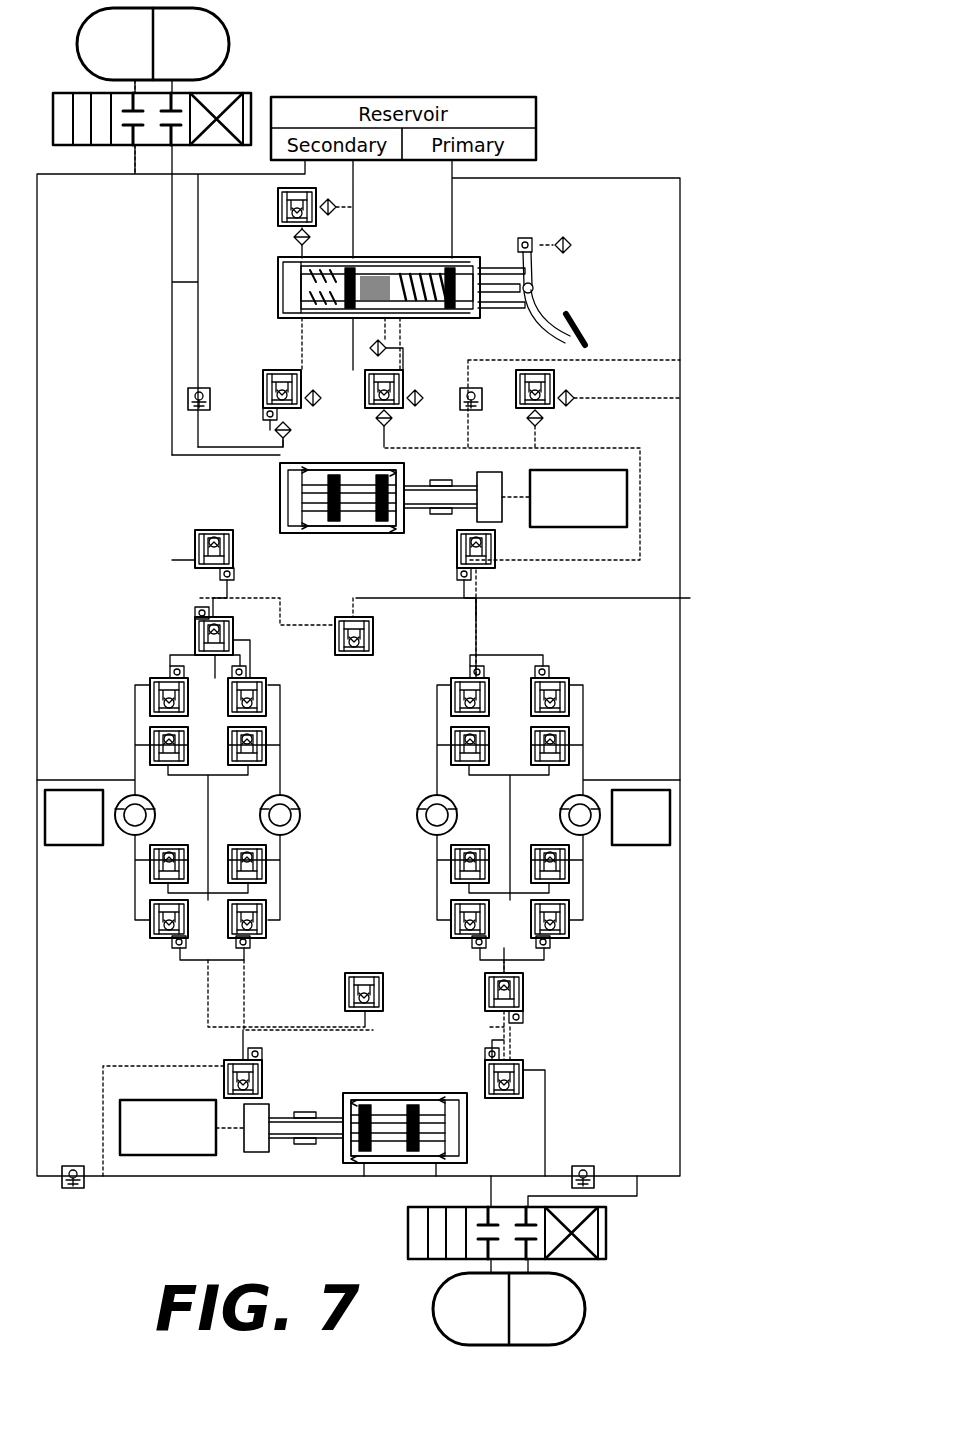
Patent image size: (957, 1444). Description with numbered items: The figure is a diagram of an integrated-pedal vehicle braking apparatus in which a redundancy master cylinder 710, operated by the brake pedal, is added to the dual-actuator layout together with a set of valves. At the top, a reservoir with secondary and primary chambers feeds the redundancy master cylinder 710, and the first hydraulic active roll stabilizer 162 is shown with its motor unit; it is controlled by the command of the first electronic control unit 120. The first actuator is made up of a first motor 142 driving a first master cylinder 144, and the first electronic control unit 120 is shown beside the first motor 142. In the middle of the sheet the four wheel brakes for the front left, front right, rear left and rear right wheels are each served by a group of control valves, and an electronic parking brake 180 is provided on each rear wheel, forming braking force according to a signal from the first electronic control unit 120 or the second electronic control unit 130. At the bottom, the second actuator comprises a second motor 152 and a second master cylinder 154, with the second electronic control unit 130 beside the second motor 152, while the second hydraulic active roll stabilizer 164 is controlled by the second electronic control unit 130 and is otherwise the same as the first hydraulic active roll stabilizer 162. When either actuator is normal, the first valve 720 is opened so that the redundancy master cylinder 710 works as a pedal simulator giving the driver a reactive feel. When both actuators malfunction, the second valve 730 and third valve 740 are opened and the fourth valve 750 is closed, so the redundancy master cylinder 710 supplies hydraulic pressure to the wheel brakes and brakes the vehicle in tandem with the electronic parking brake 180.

The first hydraulic active roll stabilizer 162 is at (230, 44).
The redundancy master cylinder 710 is at (520, 212).
The first valve 720 is at (276, 206).
The second valve 730 is at (270, 372).
The third valve 740 is at (372, 370).
The fourth valve 750 is at (556, 382).
The first motor 142 is at (489, 470).
The first master cylinder 144 is at (320, 463).
The first electronic control unit 120 is at (580, 532).
The electronic parking brake 180 is at (76, 848).
The second motor 152 is at (270, 1102).
The second master cylinder 154 is at (395, 1093).
The second electronic control unit 130 is at (165, 1158).
The second hydraulic active roll stabilizer 164 is at (587, 1312).